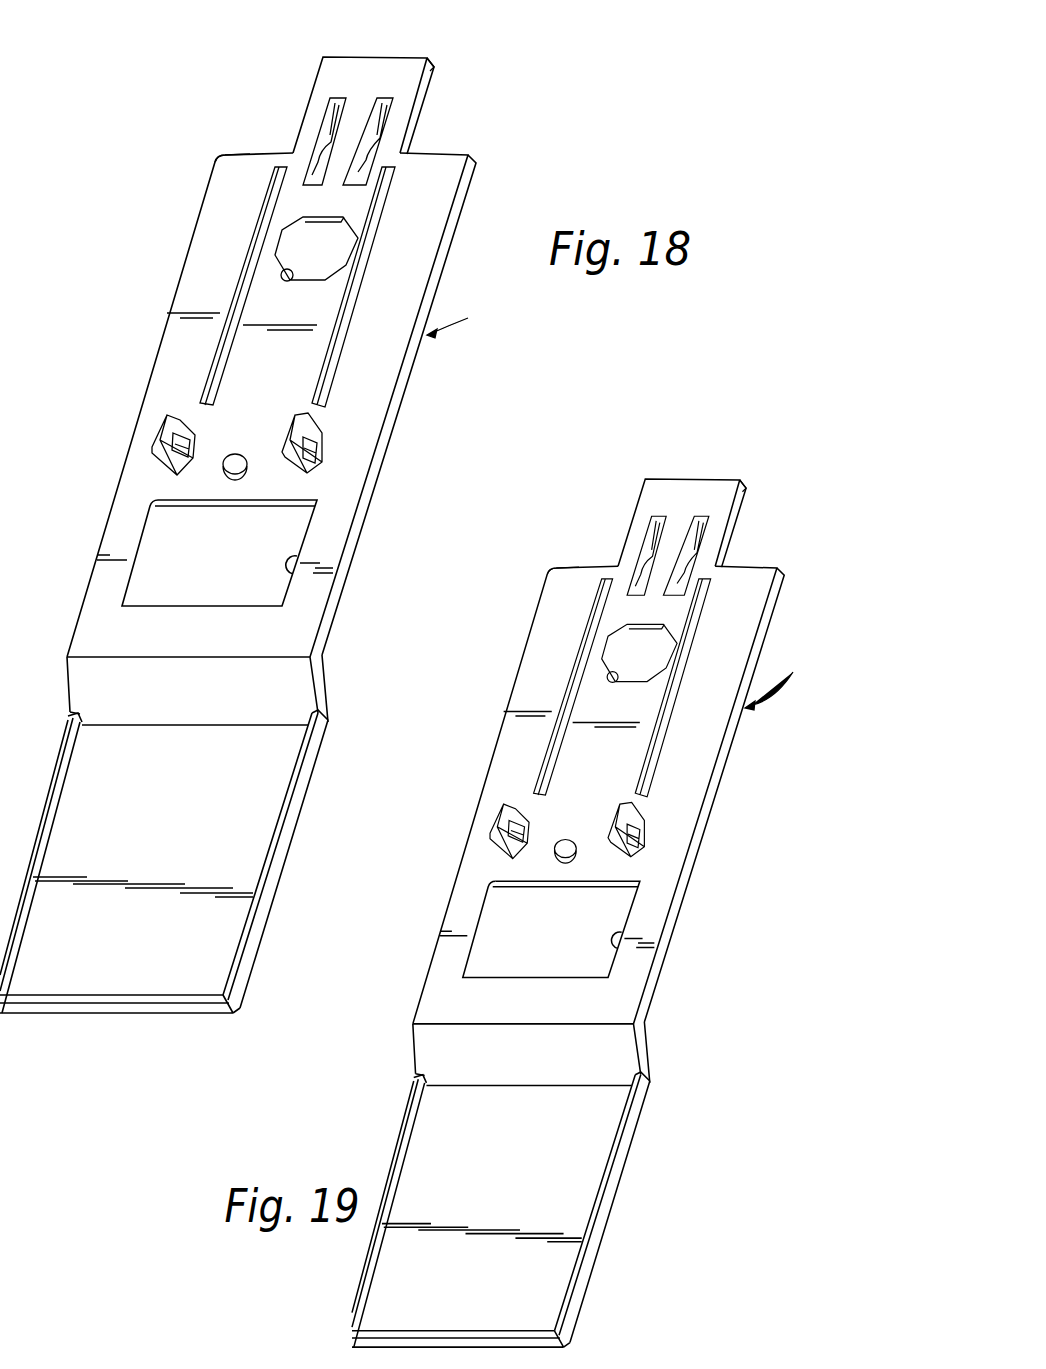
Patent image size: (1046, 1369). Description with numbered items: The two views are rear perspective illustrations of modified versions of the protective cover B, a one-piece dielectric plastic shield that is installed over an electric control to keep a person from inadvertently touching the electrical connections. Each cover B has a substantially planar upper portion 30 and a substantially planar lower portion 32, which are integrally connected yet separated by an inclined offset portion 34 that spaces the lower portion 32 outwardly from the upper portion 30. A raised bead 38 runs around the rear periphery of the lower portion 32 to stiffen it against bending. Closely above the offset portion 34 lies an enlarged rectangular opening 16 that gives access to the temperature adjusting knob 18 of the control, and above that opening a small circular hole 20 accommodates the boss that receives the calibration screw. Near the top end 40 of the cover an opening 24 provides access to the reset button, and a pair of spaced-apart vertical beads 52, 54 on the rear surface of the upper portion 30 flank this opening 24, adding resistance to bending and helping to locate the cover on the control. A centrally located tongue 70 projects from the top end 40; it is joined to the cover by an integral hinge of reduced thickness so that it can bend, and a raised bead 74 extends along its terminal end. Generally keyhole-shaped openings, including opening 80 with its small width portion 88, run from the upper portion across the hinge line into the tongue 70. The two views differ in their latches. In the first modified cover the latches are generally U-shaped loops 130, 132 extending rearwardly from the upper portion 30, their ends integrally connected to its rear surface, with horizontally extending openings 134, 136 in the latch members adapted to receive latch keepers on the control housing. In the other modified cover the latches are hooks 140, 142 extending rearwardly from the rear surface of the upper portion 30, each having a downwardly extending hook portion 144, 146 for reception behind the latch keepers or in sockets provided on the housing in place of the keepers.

In FIG. 18, the rectangular opening 16 is at (298, 558).
In FIG. 19, the rectangular opening 16 is at (620, 945).
In FIG. 19, the temperature adjusting knob 18 is at (688, 572).
In FIG. 18, the small circular hole 20 is at (248, 458).
In FIG. 19, the small circular hole 20 is at (578, 846).
In FIG. 18, the opening 24 is at (292, 279).
In FIG. 19, the opening 24 is at (622, 686).
In FIG. 18, the upper portion 30 is at (362, 455).
In FIG. 19, the upper portion 30 is at (718, 752).
In FIG. 18, the lower portion 32 is at (223, 938).
In FIG. 19, the lower portion 32 is at (553, 1262).
In FIG. 18, the inclined offset portion 34 is at (297, 697).
In FIG. 19, the inclined offset portion 34 is at (567, 1042).
In FIG. 18, the raised bead 38 is at (281, 806).
In FIG. 19, the raised bead 38 is at (596, 1195).
In FIG. 18, the top end 40 is at (238, 152).
In FIG. 19, the top end 40 is at (582, 566).
In FIG. 18, the vertical bead 52 is at (365, 223).
In FIG. 19, the vertical bead 52 is at (690, 643).
In FIG. 18, the vertical bead 54 is at (258, 241).
In FIG. 19, the vertical bead 54 is at (592, 616).
In FIG. 18, the tongue 70 is at (375, 70).
In FIG. 19, the tongue 70 is at (712, 495).
In FIG. 18, the raised bead 74 is at (437, 68).
In FIG. 19, the raised bead 74 is at (748, 489).
In FIG. 18, the keyhole-shaped opening 80 is at (333, 150).
In FIG. 19, the keyhole-shaped opening 80 is at (655, 562).
In FIG. 18, the small width portion 88 is at (362, 153).
In FIG. 18, the U-shaped loop 130 is at (175, 418).
In FIG. 18, the U-shaped loop 132 is at (307, 475).
In FIG. 18, the horizontally extending opening 134 is at (197, 445).
In FIG. 18, the horizontally extending opening 136 is at (322, 437).
In FIG. 19, the hook 140 is at (518, 815).
In FIG. 19, the hook 142 is at (645, 822).
In FIG. 19, the hook portion 144 is at (503, 833).
In FIG. 19, the hook portion 146 is at (625, 838).
In FIG. 18, the protective cover B is at (455, 317).
In FIG. 19, the protective cover B is at (777, 677).